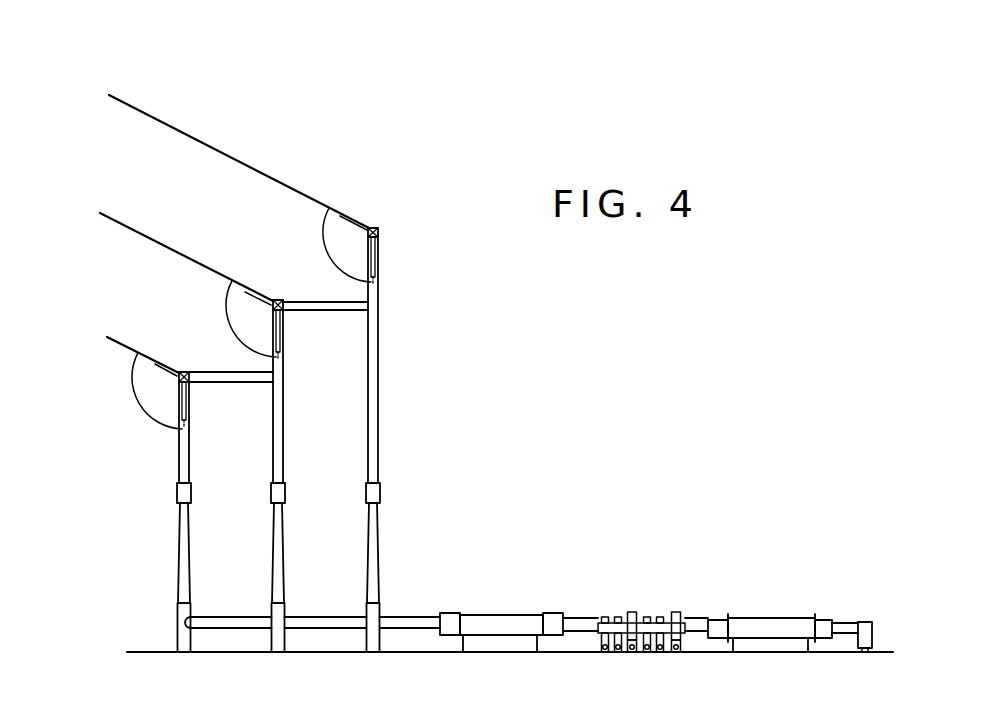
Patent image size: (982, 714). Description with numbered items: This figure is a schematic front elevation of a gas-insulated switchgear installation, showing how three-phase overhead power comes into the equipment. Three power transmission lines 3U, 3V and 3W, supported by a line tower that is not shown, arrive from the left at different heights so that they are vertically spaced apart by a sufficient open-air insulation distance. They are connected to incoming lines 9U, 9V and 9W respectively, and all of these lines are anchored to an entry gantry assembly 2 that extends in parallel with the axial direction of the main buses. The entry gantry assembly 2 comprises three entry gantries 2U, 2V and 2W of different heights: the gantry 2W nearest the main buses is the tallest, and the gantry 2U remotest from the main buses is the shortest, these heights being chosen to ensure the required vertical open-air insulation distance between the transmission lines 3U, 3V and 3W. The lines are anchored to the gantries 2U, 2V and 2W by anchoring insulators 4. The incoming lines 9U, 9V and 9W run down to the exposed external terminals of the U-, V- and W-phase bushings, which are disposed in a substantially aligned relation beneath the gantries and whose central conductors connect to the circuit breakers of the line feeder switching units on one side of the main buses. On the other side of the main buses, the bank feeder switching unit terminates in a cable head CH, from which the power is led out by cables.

The entry gantry assembly 2 is at (379, 433).
The entry gantry of U-phase 2U is at (184, 372).
The entry gantry of V-phase 2V is at (278, 300).
The entry gantry of W-phase 2W is at (380, 228).
The U-phase power transmission line 3U is at (117, 341).
The V-phase power transmission line 3V is at (152, 241).
The W-phase power transmission line 3W is at (202, 143).
The anchoring insulator 4 is at (348, 214).
The U-phase incoming line 9U is at (190, 453).
The V-phase incoming line 9V is at (284, 406).
The W-phase incoming line 9W is at (379, 334).
The cable head CH is at (872, 632).